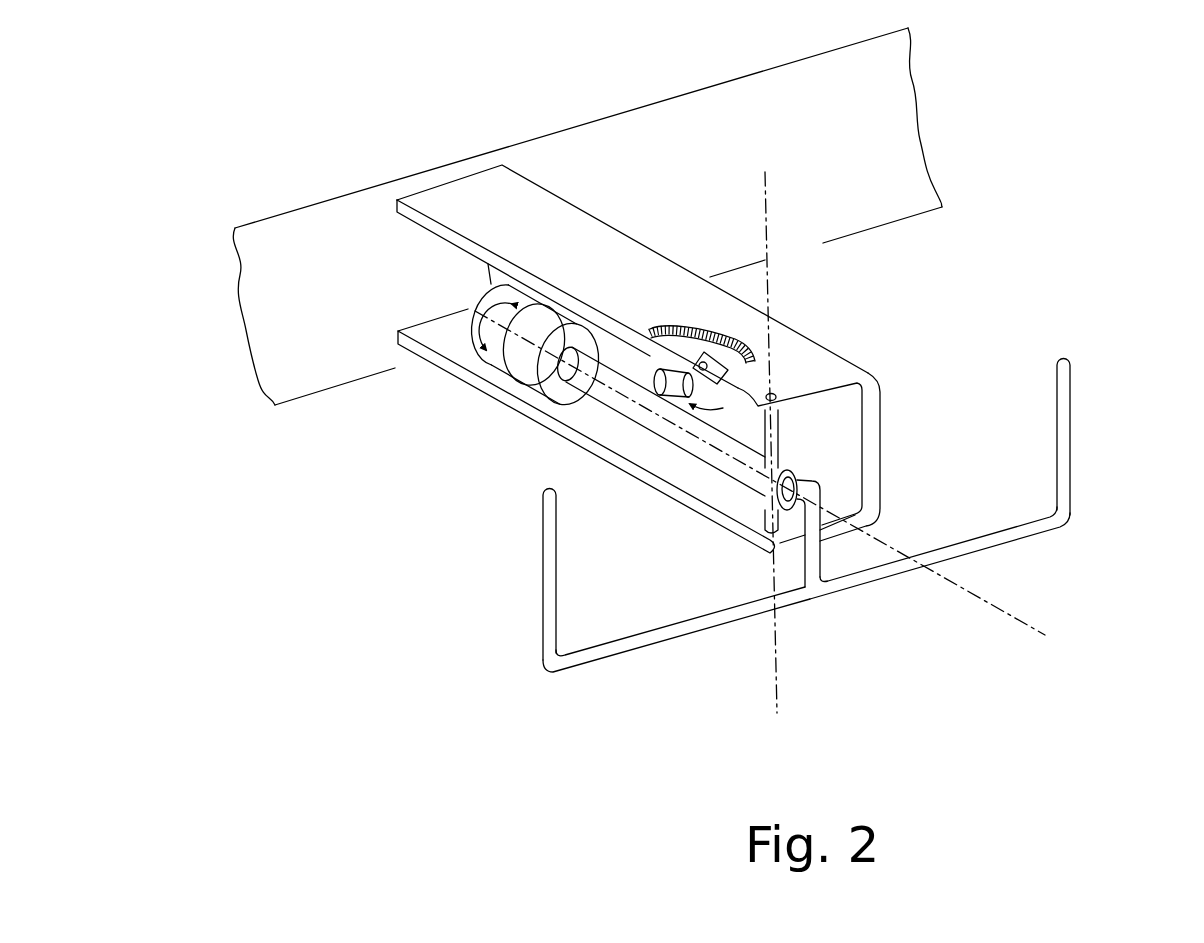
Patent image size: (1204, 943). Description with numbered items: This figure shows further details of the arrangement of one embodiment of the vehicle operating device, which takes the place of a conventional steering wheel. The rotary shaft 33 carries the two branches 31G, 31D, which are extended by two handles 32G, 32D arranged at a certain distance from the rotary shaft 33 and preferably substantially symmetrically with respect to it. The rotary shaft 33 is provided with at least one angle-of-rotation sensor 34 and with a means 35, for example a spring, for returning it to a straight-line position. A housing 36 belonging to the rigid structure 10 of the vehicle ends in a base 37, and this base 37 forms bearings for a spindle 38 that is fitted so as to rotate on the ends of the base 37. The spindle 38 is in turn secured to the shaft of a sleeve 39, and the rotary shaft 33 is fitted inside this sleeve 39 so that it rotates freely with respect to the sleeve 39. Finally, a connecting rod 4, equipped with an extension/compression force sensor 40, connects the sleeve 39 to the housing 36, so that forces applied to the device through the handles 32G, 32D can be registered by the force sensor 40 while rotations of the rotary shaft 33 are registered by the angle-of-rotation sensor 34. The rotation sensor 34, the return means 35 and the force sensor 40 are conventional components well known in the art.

The rigid structure 10 is at (340, 228).
The housing 36 is at (540, 210).
The connecting rod 4 is at (677, 366).
The extension/compression force sensor 40 is at (770, 392).
The base 37 is at (774, 393).
The means for returning to a straight-line position 35 is at (462, 383).
The angle-of-rotation sensor 34 is at (533, 377).
The spindle 38 is at (778, 433).
The rotary shaft 33 is at (800, 487).
The right handle 32D is at (1070, 372).
The left handle 32G is at (550, 527).
The sleeve 39 is at (698, 440).
The right branch 31D is at (1013, 533).
The left branch 31G is at (617, 647).